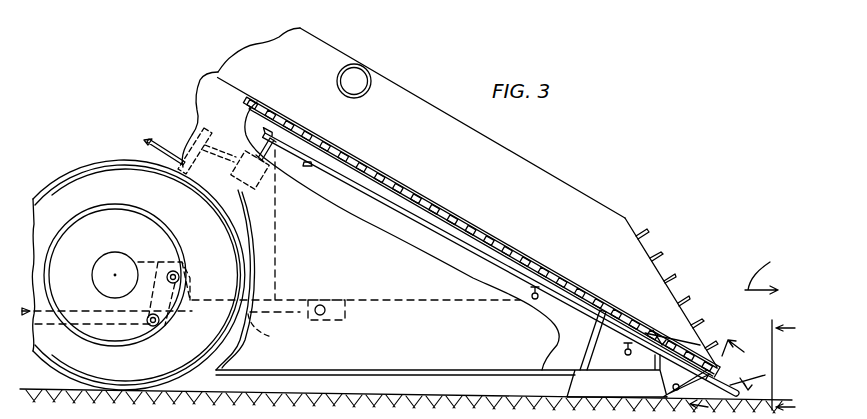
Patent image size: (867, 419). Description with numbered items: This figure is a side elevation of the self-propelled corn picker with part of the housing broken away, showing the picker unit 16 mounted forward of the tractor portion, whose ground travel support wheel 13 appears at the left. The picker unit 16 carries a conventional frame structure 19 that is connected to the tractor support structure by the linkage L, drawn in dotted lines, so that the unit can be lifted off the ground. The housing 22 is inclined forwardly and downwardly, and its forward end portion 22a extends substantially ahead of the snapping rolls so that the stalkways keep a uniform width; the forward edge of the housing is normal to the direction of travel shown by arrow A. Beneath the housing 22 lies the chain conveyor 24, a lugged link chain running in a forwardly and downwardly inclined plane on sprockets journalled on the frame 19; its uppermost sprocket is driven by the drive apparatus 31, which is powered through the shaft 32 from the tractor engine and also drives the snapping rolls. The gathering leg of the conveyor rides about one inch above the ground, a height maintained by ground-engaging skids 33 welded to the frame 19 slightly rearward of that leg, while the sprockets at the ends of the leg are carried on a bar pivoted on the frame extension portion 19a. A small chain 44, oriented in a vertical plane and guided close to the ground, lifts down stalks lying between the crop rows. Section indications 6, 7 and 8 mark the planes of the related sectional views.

The ground travel support wheels 13 is at (90, 175).
The picker unit 16 is at (587, 177).
The frame structure 19 is at (400, 212).
The extension portion 19a is at (572, 309).
The housing 22 is at (506, 154).
The forward end portions 22a is at (632, 229).
The conveyor 24 is at (406, 204).
The drive apparatus 31 is at (198, 127).
The shaft 32 is at (149, 141).
The ground-engaging skids 33 is at (648, 397).
The small chain 44 is at (666, 283).
The section line 6- 6 is at (724, 379).
The section line 7- 7 is at (705, 348).
The section line 8- 8 is at (792, 368).
The arrow A is at (767, 275).
The linkage L is at (268, 332).